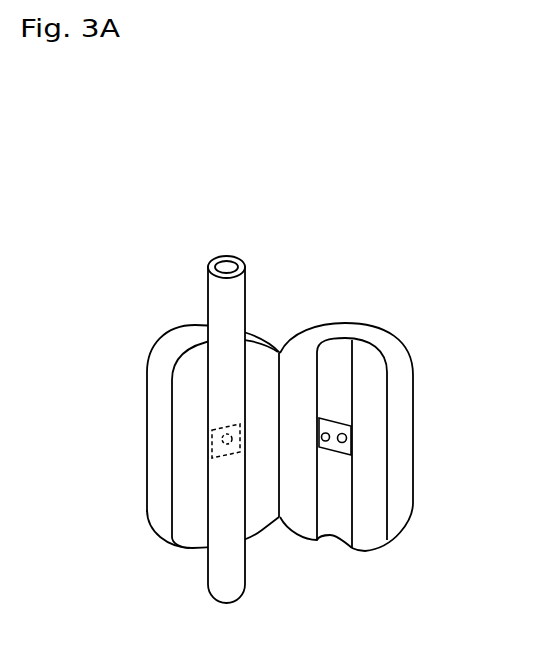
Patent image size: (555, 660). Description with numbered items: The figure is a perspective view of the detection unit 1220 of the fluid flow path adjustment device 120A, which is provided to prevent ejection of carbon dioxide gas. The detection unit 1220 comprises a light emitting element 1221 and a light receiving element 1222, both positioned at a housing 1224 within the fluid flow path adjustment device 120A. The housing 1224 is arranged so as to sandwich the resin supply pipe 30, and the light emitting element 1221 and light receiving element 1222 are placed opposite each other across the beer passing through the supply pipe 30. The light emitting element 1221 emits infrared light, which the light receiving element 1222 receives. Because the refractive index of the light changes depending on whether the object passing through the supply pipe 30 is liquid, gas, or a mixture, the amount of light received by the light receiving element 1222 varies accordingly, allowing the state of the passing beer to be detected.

The fluid flow path adjustment device 120A is at (443, 140).
The detection unit 1220 is at (154, 290).
The supply pipe 30 is at (237, 291).
The light emitting element 1221 is at (211, 444).
The light receiving element 1222 is at (340, 420).
The housing 1224 is at (411, 419).